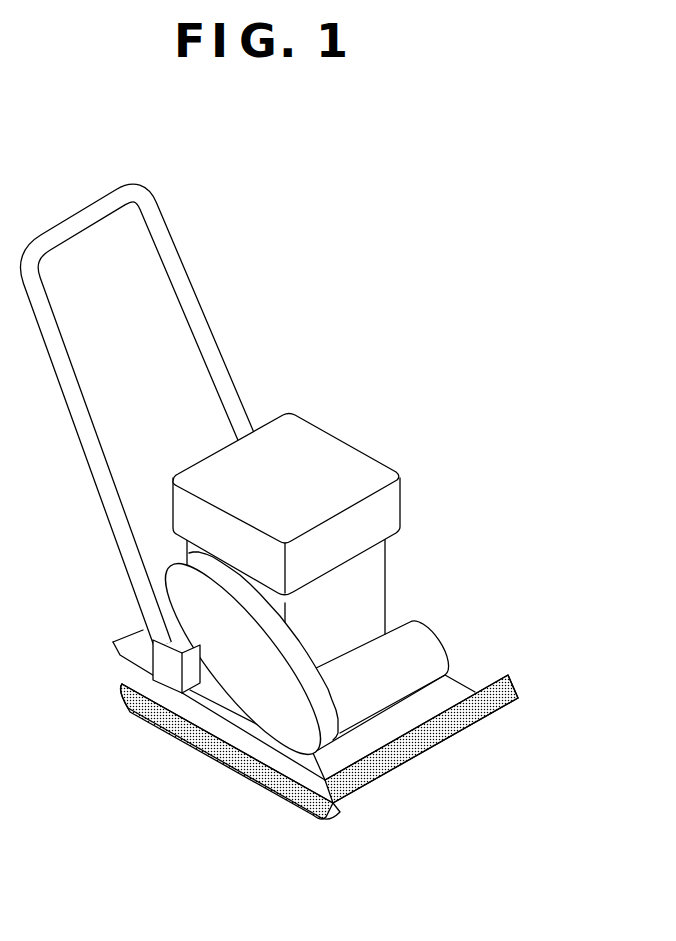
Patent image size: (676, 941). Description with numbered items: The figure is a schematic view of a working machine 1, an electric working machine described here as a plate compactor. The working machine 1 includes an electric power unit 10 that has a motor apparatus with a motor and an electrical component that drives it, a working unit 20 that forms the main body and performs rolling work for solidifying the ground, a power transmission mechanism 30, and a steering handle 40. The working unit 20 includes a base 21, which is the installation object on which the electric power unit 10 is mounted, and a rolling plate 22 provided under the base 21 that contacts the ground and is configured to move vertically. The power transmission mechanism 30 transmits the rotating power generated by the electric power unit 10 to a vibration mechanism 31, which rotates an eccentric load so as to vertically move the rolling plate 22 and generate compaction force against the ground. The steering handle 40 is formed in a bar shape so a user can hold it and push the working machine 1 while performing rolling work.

The working machine 1 is at (455, 328).
The electric power unit 10 is at (383, 567).
The working unit 20 is at (238, 869).
The base 21 is at (280, 762).
The rolling plate 22 is at (313, 806).
The power transmission mechanism 30 is at (247, 687).
The vibration mechanism 31 is at (430, 652).
The steering handle 40 is at (176, 236).